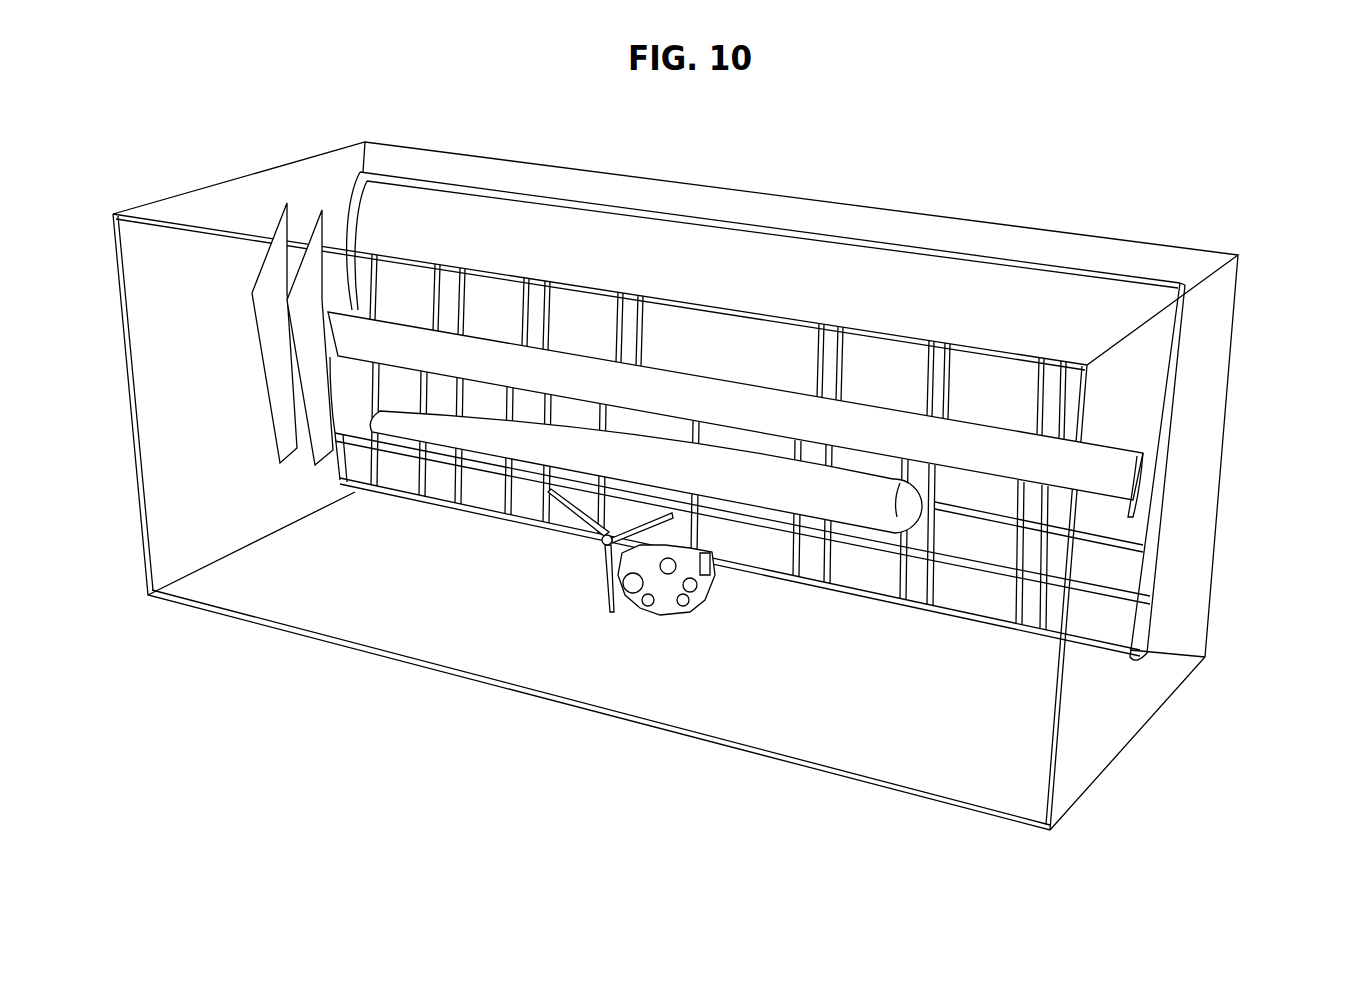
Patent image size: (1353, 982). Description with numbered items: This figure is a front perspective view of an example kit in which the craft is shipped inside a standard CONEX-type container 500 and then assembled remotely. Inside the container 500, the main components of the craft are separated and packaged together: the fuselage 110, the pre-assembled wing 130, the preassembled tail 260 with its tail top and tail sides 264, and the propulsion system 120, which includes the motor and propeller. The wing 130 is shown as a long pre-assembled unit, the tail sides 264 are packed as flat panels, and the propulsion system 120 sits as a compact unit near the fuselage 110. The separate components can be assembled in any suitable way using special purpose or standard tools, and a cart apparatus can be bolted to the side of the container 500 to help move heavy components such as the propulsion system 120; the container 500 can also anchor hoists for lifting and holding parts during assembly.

The container 500 is at (890, 206).
The pre-assembled wing 130 is at (1172, 392).
The tail 260 is at (1140, 533).
The tail sides 264 is at (257, 357).
The fuselage 110 is at (872, 507).
The propulsion system 120 is at (665, 613).